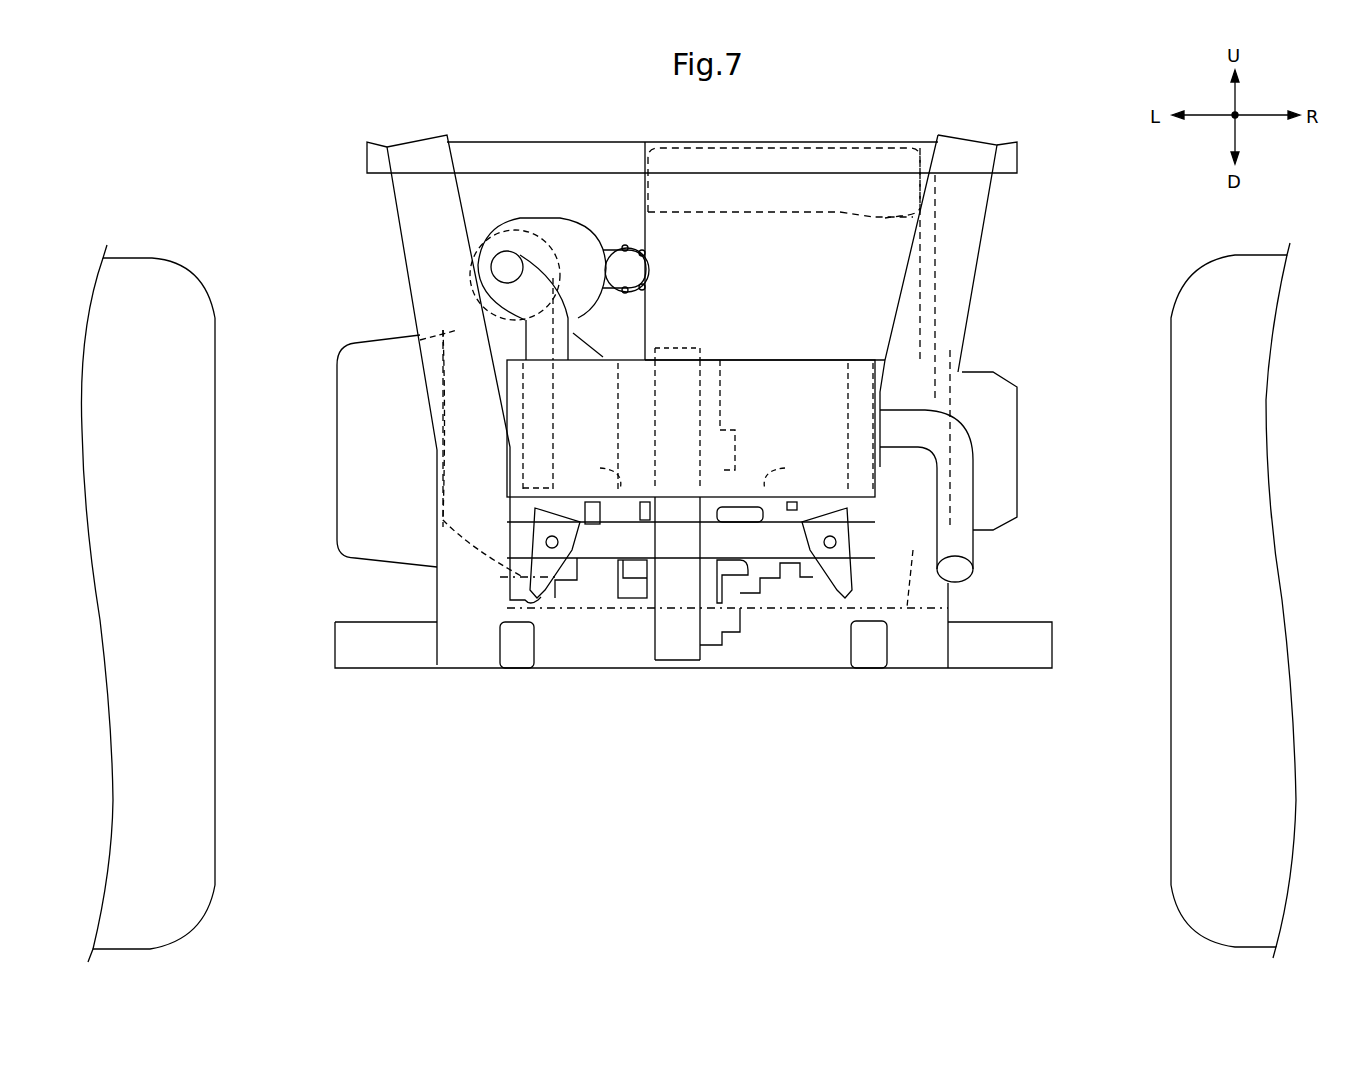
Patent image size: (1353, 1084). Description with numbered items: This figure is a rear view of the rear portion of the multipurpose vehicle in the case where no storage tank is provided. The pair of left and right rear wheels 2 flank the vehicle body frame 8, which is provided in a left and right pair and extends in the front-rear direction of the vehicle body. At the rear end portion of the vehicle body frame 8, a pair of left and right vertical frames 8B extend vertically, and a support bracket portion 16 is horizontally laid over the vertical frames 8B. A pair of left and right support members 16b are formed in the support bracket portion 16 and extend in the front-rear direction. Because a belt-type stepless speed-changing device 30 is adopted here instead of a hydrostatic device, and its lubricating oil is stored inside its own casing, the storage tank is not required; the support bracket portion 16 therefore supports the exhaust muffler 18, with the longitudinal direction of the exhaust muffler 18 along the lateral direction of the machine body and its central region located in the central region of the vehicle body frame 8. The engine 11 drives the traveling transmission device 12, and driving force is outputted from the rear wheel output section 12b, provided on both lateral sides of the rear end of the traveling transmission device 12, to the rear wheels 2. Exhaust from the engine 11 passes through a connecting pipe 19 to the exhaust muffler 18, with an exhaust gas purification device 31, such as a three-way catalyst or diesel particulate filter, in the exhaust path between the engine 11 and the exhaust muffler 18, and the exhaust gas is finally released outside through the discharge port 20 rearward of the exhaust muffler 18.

The rear wheels 2 is at (187, 519).
The vehicle body frame 8 is at (500, 602).
The vertical frames 8B is at (430, 220).
The engine 11 is at (803, 148).
The traveling transmission device 12 is at (681, 608).
The rear wheel output section 12b is at (578, 470).
The support bracket portion 16 is at (738, 497).
The support members 16b is at (724, 581).
The exhaust muffler 18 is at (771, 315).
The connecting pipe 19 is at (625, 223).
The discharge port 20 is at (960, 450).
The belt-type stepless speed-changing device 30 is at (375, 410).
The exhaust gas purification device 31 is at (538, 172).